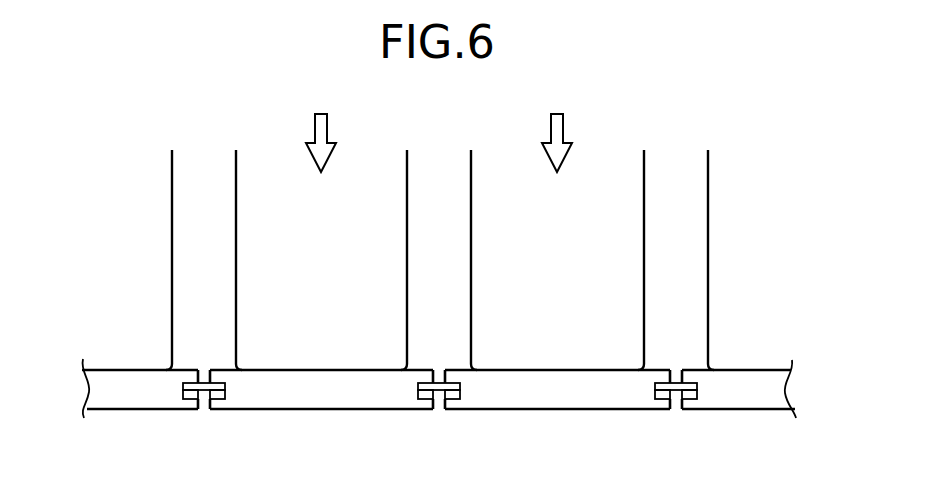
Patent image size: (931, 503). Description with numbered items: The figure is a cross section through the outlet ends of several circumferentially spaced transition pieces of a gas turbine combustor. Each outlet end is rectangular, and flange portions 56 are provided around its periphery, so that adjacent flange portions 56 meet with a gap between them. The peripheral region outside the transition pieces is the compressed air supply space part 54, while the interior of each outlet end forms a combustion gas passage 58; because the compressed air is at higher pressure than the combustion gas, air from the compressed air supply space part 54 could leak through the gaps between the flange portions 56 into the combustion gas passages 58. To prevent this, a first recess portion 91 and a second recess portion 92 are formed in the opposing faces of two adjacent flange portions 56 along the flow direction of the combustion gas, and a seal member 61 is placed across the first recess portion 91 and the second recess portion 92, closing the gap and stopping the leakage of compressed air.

The compressed air supply space part 54 is at (689, 221).
The flange portion 56 is at (105, 397).
The combustion gas passage 58 is at (578, 317).
The seal member 61 is at (204, 390).
The first recess portion 91 is at (183, 393).
The second recess portion 92 is at (225, 393).